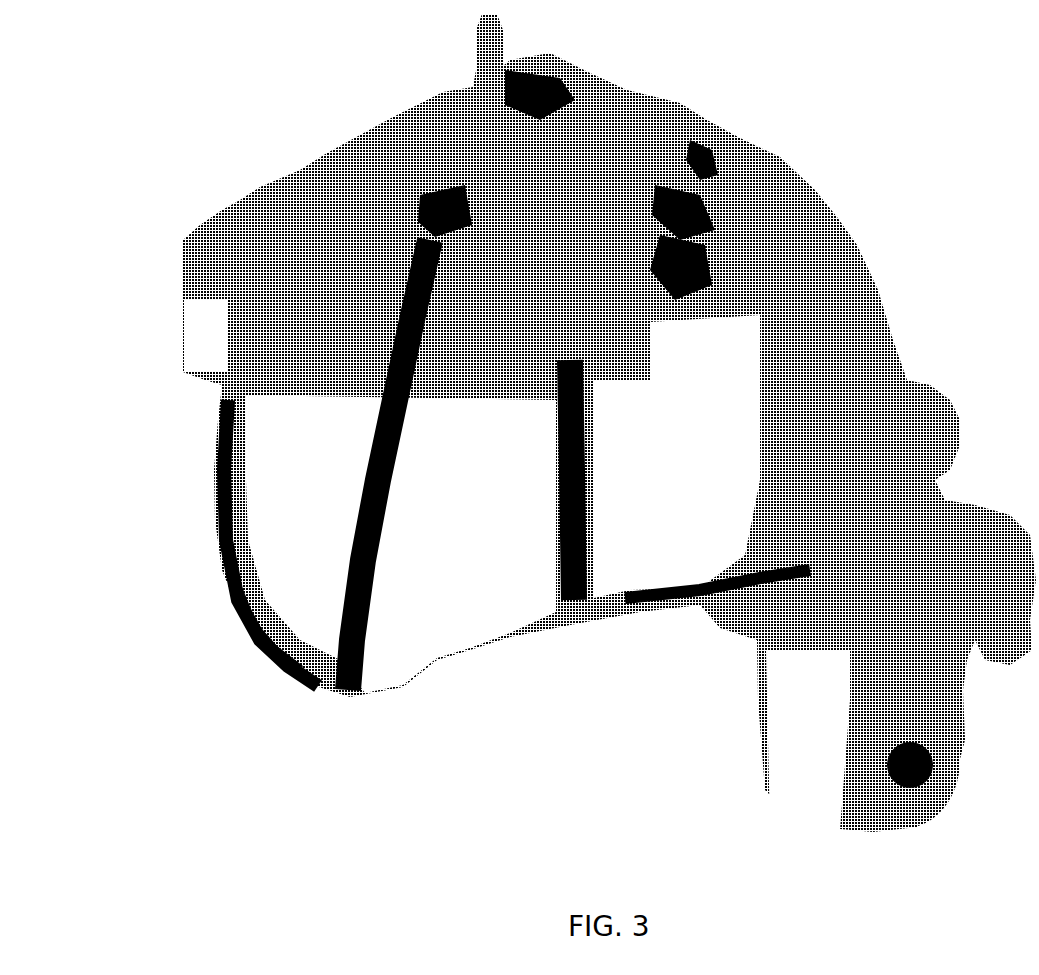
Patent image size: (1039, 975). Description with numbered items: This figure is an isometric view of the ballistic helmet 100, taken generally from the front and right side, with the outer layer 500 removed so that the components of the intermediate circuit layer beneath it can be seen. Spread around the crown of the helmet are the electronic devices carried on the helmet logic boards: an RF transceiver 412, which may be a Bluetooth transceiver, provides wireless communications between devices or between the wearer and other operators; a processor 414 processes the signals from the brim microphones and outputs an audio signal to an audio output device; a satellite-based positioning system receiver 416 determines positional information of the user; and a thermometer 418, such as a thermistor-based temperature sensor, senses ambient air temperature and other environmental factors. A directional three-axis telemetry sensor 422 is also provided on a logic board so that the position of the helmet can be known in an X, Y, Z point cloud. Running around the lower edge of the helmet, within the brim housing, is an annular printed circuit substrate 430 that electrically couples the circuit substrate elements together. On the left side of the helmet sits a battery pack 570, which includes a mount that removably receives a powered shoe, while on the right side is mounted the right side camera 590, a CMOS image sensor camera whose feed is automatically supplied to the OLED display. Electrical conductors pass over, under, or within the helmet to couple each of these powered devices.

The ballistic helmet 100 is at (1014, 260).
The outer layer 500 is at (389, 108).
The battery pack 570 is at (173, 298).
The right side camera 590 is at (355, 715).
The RF transceiver 412 is at (707, 238).
The processor 414 is at (714, 140).
The satellite-based positioning system receiver 416 is at (412, 190).
The thermometer 418 is at (428, 260).
The directional 3-axis telemetry sensor 422 is at (719, 194).
The annular printed circuit substrate 430 is at (262, 624).